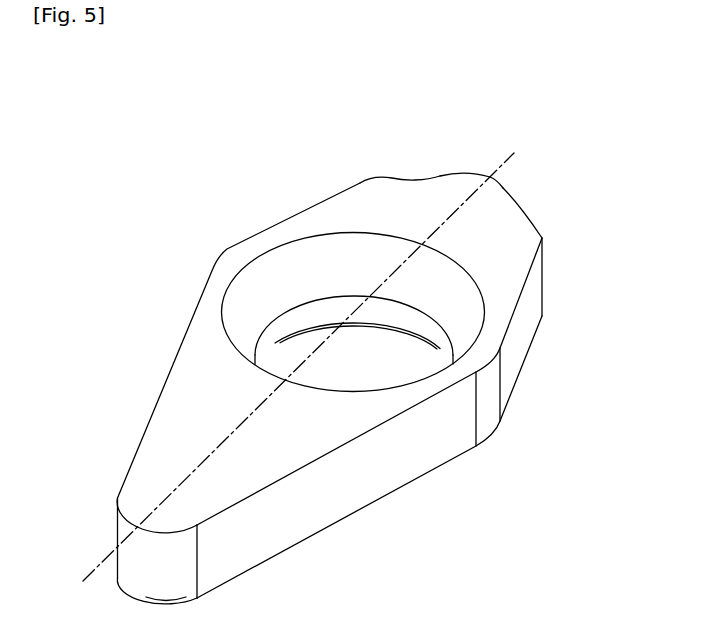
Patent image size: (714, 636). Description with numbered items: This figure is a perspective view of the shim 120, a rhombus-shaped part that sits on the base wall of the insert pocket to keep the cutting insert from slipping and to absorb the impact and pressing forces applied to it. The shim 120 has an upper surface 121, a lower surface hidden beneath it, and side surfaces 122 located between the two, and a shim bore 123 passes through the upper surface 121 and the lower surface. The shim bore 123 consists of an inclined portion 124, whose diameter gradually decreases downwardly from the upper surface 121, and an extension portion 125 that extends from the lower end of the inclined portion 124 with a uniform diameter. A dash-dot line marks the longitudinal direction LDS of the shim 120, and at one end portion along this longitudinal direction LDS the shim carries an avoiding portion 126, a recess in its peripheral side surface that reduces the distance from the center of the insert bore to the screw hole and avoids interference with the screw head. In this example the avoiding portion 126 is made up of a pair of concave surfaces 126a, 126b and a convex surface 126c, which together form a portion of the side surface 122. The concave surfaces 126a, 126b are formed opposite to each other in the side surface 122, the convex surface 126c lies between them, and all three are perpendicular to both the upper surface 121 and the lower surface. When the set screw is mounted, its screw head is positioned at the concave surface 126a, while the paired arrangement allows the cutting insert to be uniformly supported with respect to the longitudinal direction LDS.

The shim 120 is at (205, 160).
The upper surface 121 is at (180, 411).
The side surfaces 122 is at (517, 333).
The shim bore 123 is at (306, 342).
The inclined portion 124 is at (363, 257).
The extension portion 125 is at (338, 308).
The avoiding portion 126 is at (574, 104).
The concave surface 126a is at (527, 213).
The concave surface 126b is at (420, 174).
The convex surface 126c is at (484, 170).
The longitudinal direction LDS is at (102, 563).